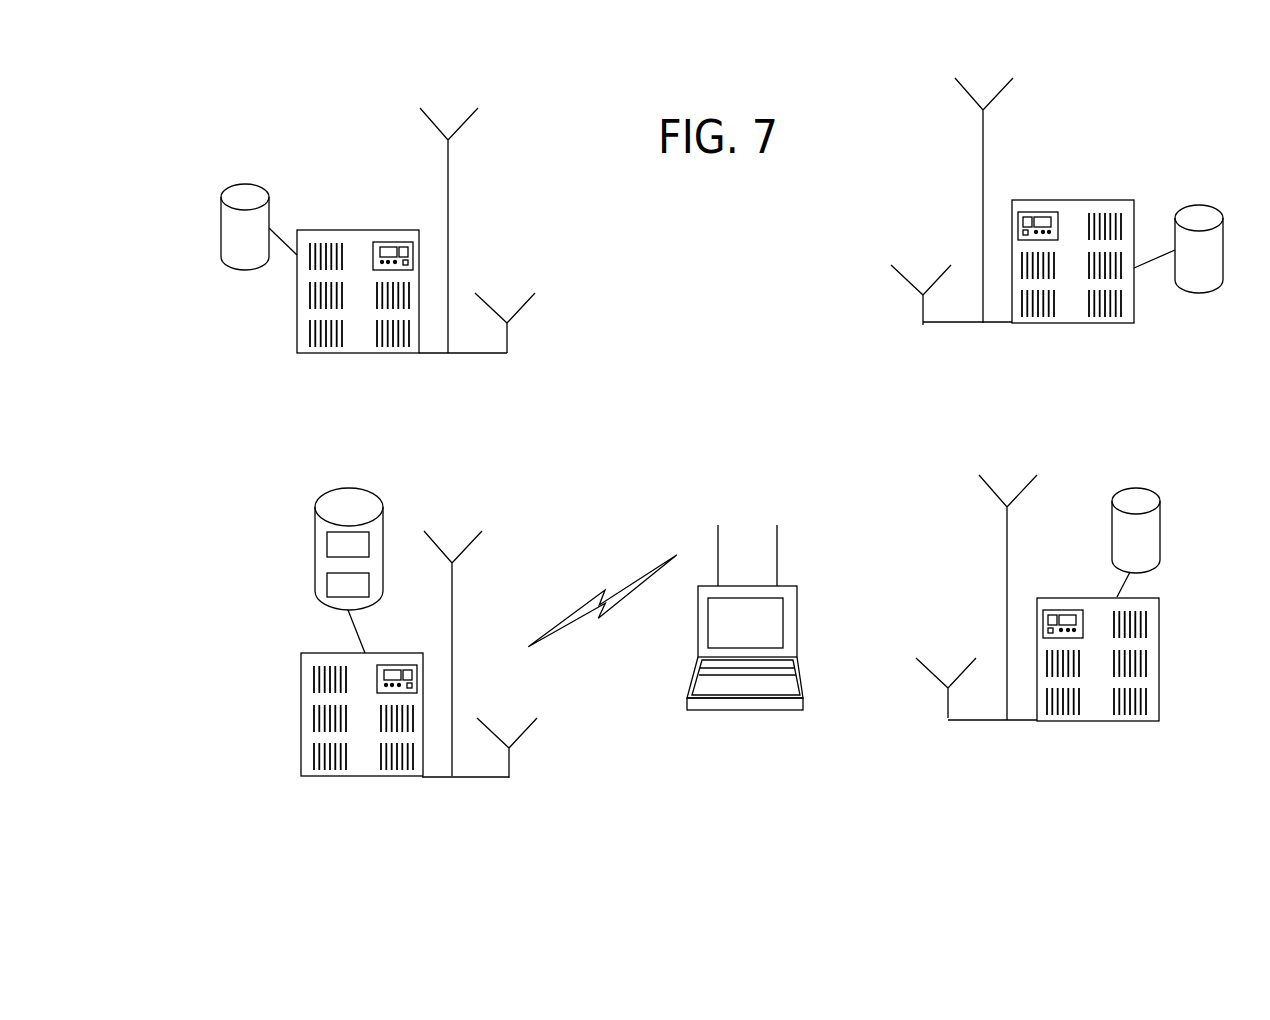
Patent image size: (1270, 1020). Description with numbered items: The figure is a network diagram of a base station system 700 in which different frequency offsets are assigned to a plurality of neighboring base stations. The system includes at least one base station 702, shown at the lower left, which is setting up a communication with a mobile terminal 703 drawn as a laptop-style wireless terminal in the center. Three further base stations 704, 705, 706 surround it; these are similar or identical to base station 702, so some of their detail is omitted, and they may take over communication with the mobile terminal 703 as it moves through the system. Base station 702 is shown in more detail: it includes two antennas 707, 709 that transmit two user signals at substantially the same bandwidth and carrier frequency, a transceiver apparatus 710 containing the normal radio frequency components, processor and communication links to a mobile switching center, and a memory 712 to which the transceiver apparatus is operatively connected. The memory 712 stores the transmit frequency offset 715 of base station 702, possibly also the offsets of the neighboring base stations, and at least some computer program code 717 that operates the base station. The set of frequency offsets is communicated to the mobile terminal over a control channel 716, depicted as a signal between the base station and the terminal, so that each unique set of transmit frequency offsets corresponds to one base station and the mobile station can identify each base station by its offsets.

The base station system 700 is at (905, 748).
The base station 702 is at (543, 553).
The mobile terminal 703 is at (797, 605).
The base station 704 is at (345, 160).
The base station 705 is at (1127, 165).
The base station 706 is at (1192, 513).
The antenna 707 is at (470, 538).
The antenna 709 is at (527, 733).
The transceiver apparatus 710 is at (337, 777).
The memory 712 is at (352, 488).
The transmit frequency offset 715 is at (327, 547).
The control channel 716 is at (632, 577).
The computer program code 717 is at (325, 583).